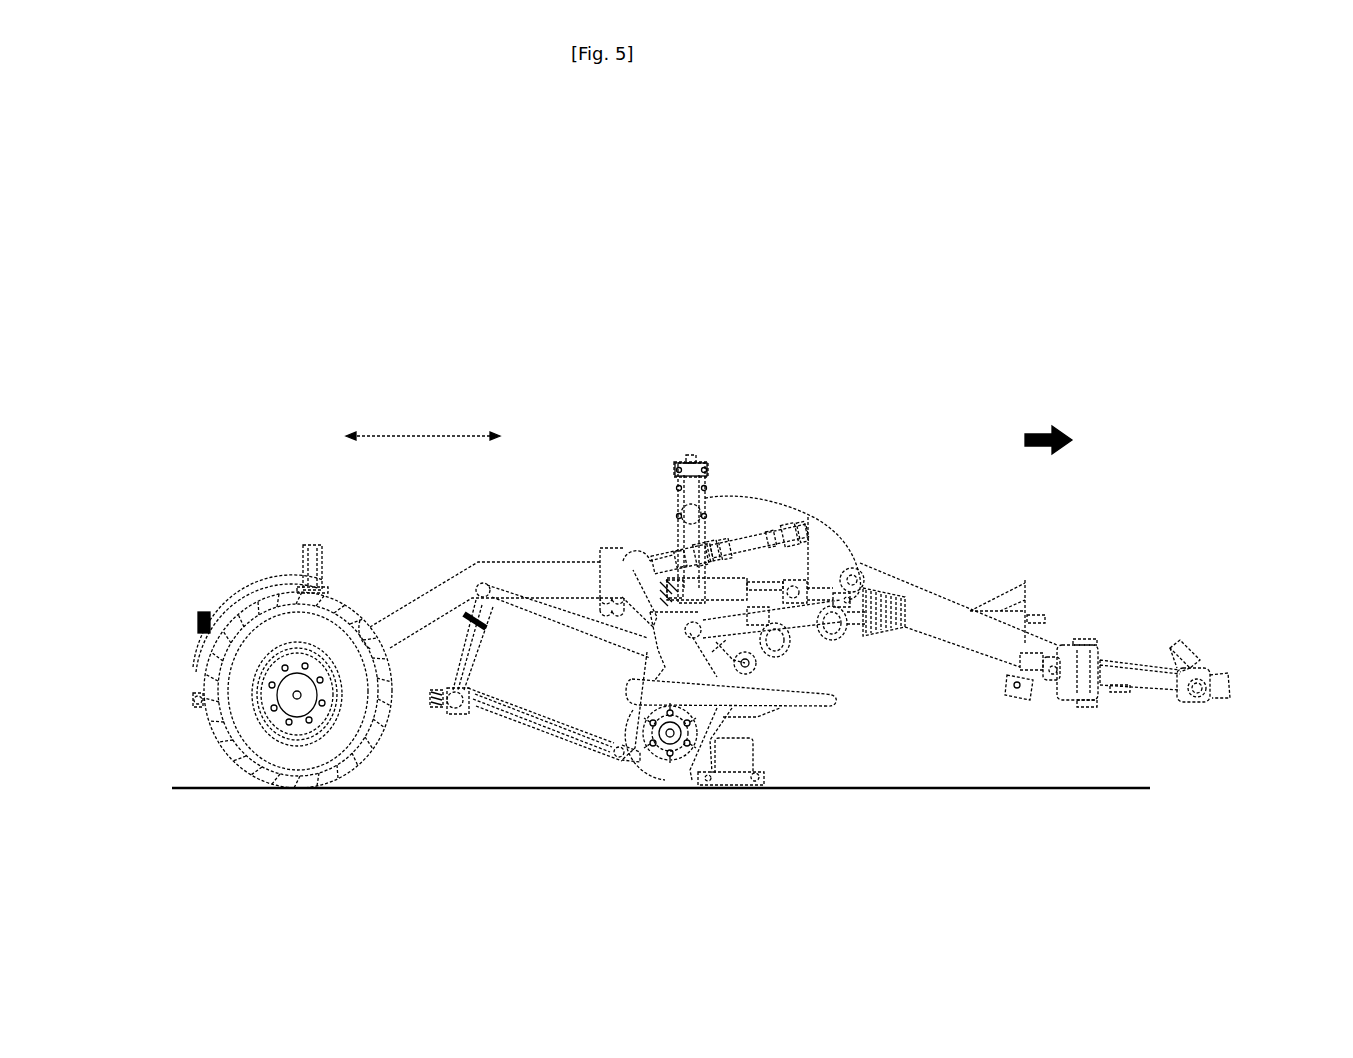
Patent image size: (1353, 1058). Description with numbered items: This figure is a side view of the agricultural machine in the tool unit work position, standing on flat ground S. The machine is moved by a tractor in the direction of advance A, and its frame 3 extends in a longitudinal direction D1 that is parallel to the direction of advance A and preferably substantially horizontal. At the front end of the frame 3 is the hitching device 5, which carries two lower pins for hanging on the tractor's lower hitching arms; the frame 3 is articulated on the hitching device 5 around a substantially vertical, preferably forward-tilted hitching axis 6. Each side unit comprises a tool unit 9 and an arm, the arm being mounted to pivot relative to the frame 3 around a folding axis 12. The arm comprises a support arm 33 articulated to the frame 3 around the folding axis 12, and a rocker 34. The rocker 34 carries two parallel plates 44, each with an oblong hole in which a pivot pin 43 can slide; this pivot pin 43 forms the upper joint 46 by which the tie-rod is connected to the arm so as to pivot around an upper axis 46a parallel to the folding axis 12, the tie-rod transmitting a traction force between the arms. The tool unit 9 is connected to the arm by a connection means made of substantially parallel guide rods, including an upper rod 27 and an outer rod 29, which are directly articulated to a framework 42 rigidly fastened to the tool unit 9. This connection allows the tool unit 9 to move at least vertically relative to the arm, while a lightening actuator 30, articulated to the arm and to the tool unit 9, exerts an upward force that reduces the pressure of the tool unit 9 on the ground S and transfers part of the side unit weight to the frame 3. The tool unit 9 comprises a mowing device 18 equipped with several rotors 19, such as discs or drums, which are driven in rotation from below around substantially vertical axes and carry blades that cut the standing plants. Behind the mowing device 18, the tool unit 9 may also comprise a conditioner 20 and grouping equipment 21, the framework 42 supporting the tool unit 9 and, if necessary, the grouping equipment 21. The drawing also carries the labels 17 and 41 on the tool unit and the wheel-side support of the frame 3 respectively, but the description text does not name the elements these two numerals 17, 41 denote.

The frame 3 is at (558, 580).
The hitching device 5 is at (1135, 682).
The hitching axis 6 is at (1088, 676).
The tool unit 9 is at (743, 868).
The folding axis 12 is at (690, 603).
The knuckle arm 17 is at (657, 692).
The mowing device 18 is at (728, 815).
The rotors 19 is at (747, 773).
The conditioner 20 is at (668, 815).
The grouping equipment 21 is at (543, 815).
The upper rod 27 is at (757, 540).
The outer rod 29 is at (730, 622).
The lightening actuator 30 is at (703, 590).
The support arm 33 is at (835, 562).
The rocker 34 is at (675, 488).
The wheel support post 41 is at (310, 565).
The framework 42 is at (650, 598).
The pivot pin 43 is at (690, 466).
The parallel plates 44 is at (702, 517).
The upper joint 46 is at (691, 469).
The upper axis 46a is at (677, 470).
The direction of advance A is at (1048, 430).
The longitudinal direction D1 is at (412, 437).
The ground S is at (982, 789).